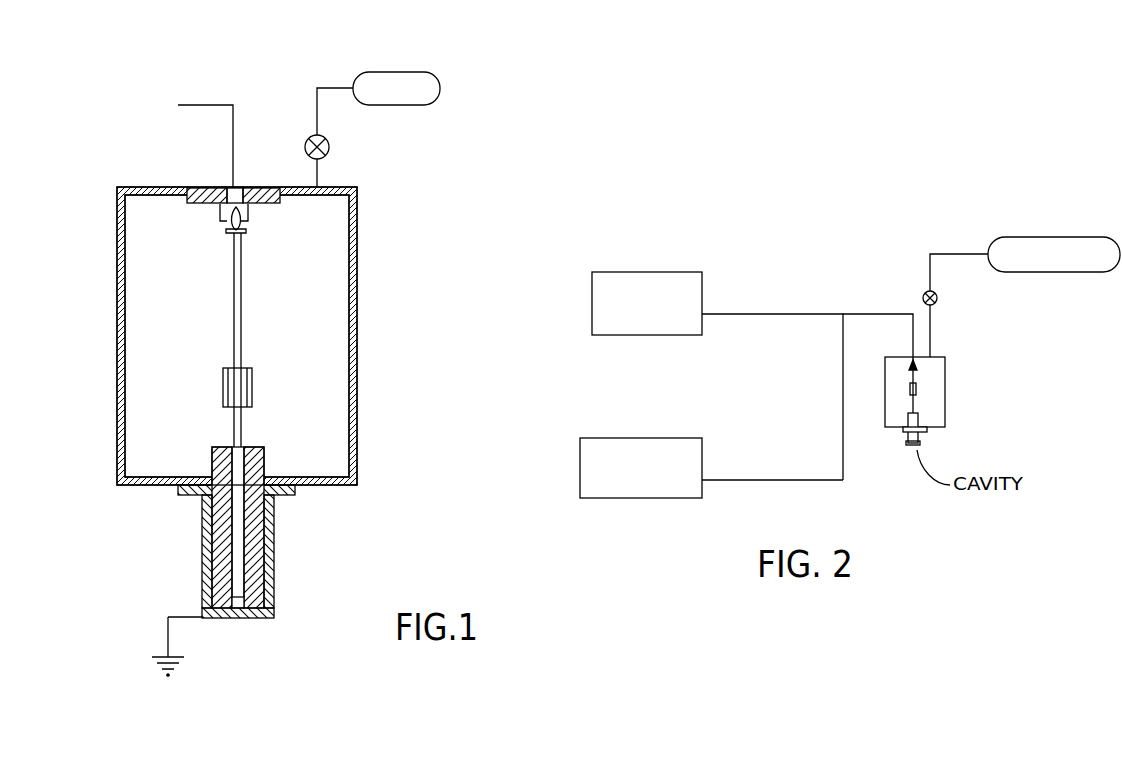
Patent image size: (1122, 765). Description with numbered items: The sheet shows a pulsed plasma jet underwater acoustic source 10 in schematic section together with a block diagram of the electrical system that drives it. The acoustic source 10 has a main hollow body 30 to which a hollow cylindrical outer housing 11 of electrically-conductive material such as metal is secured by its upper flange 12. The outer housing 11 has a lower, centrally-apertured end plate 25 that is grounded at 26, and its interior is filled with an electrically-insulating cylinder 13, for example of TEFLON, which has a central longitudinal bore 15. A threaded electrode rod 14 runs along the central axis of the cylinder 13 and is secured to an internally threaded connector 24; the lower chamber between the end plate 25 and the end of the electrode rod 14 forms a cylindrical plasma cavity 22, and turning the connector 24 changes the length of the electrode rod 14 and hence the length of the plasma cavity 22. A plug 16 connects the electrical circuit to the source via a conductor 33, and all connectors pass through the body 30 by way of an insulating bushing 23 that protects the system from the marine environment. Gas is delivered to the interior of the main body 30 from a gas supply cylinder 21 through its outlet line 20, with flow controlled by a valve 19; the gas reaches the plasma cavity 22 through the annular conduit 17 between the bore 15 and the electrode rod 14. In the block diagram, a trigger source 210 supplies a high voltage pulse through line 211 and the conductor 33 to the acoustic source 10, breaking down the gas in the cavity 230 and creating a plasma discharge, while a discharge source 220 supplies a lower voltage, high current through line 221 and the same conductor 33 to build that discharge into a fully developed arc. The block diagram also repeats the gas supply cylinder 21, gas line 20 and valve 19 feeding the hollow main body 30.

In FIG. 1, the plasma jet underwater acoustic source 10 is at (357, 320).
In FIG. 2, the plasma jet underwater acoustic source 10 is at (945, 380).
In FIG. 1, the outer housing 11 is at (274, 557).
In FIG. 1, the upper flange 12 is at (290, 495).
In FIG. 1, the electrically-insulating cylinder 13 is at (213, 557).
In FIG. 1, the electrode rod 14 is at (232, 425).
In FIG. 2, the electrode rod 14 is at (915, 402).
In FIG. 1, the central longitudinal bore 15 is at (245, 443).
In FIG. 1, the plug 16 is at (249, 230).
In FIG. 1, the annular conduit 17 is at (233, 510).
In FIG. 1, the valve 19 is at (329, 147).
In FIG. 2, the valve 19 is at (937, 298).
In FIG. 1, the outlet line 20 is at (313, 177).
In FIG. 2, the outlet line 20 is at (933, 333).
In FIG. 1, the gas supply cylinder 21 is at (396, 88).
In FIG. 2, the gas supply cylinder 21 is at (1000, 241).
In FIG. 1, the plasma cavity 22 is at (244, 602).
In FIG. 1, the insulating bushing 23 is at (210, 187).
In FIG. 1, the threaded connector 24 is at (225, 392).
In FIG. 1, the end plate 25 is at (260, 620).
In FIG. 1, the ground 26 is at (168, 637).
In FIG. 1, the main hollow body 30 is at (303, 360).
In FIG. 1, the conductor 33 is at (197, 105).
In FIG. 2, the conductor 33 is at (867, 313).
In FIG. 2, the trigger source 210 is at (702, 287).
In FIG. 2, the line 211 is at (780, 313).
In FIG. 2, the discharge source 220 is at (702, 458).
In FIG. 2, the line 221 is at (777, 479).
In FIG. 2, the cavity 230 is at (925, 440).